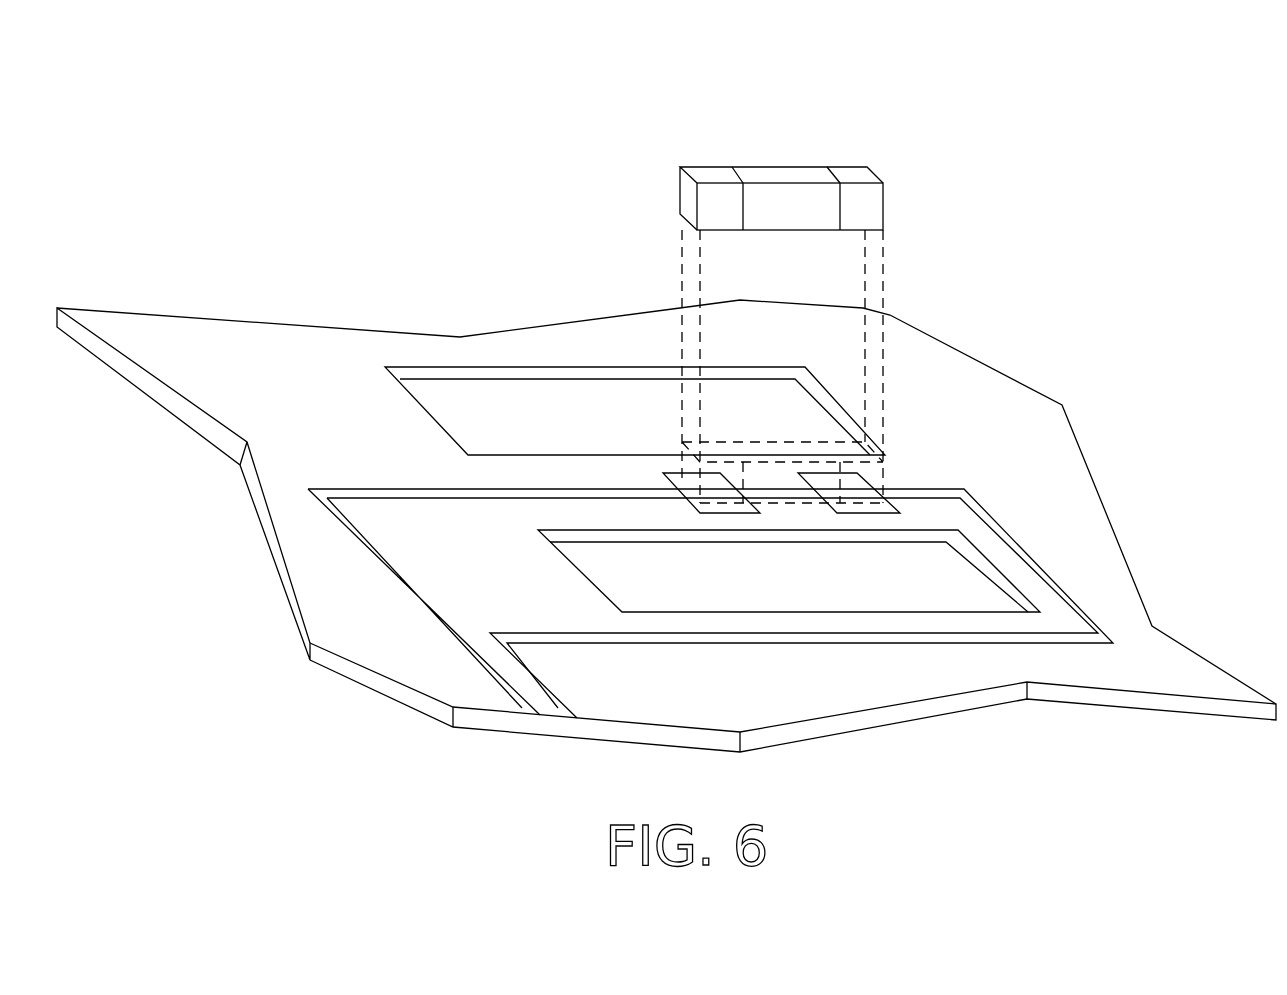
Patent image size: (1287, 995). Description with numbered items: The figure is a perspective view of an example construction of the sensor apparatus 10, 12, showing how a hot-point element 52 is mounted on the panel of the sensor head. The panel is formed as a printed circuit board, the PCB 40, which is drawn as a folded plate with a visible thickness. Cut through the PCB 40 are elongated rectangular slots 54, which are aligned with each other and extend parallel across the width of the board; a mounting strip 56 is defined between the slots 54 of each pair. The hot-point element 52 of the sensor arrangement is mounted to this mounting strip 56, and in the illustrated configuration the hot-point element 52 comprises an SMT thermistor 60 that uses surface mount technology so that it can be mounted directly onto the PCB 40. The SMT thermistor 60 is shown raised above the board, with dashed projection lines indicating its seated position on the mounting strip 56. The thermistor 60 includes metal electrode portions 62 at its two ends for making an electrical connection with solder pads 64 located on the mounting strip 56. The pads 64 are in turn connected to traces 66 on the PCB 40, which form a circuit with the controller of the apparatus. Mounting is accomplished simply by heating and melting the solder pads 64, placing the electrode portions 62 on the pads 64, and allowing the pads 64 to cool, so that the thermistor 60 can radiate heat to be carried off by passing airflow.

The electronic device 10 is at (666, 417).
The printed circuit board assembly 12 is at (666, 417).
The PCB 40 is at (560, 340).
The hot-point element 52 is at (792, 266).
The rectangular slot 54 is at (480, 410).
The mounting strip 56 is at (578, 473).
The SMT thermistor 60 is at (792, 266).
The metal electrode portion 62 is at (712, 180).
The solder pad 64 is at (730, 515).
The trace 66 is at (562, 632).